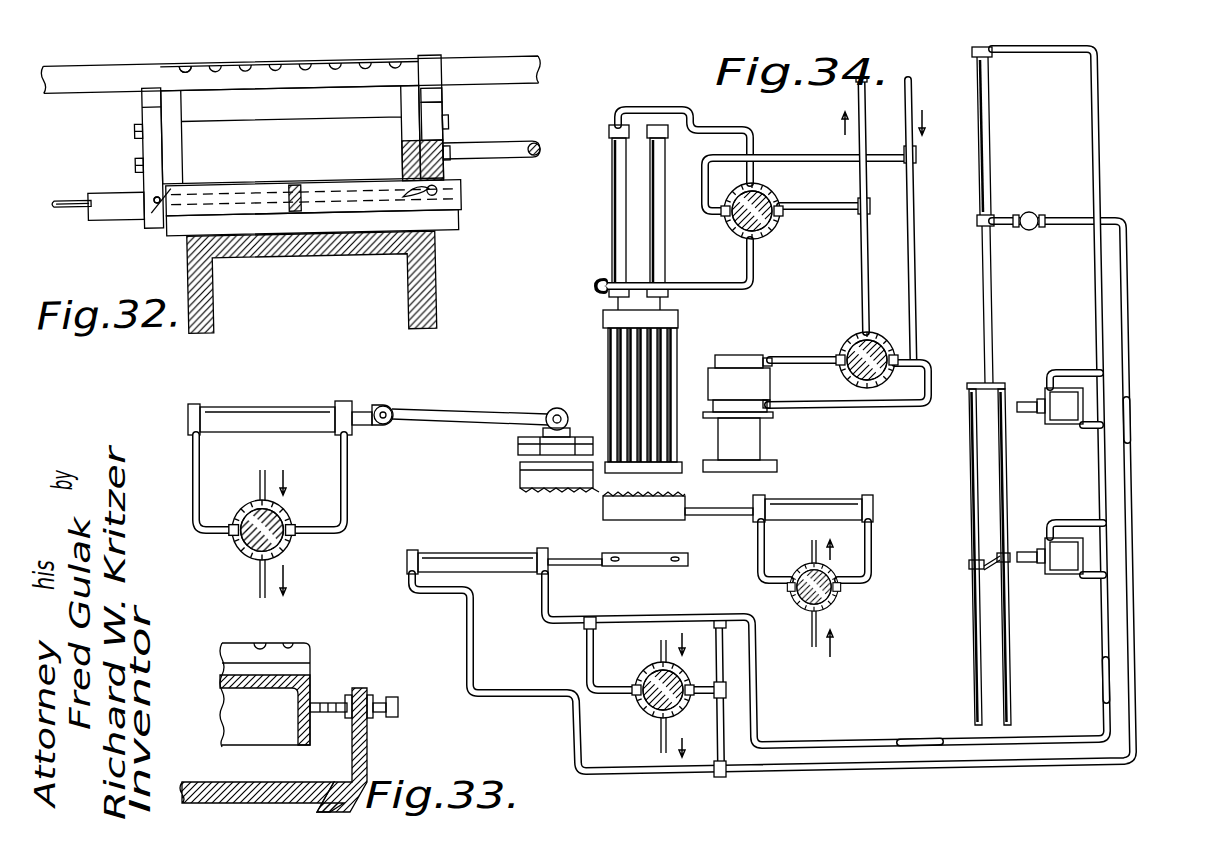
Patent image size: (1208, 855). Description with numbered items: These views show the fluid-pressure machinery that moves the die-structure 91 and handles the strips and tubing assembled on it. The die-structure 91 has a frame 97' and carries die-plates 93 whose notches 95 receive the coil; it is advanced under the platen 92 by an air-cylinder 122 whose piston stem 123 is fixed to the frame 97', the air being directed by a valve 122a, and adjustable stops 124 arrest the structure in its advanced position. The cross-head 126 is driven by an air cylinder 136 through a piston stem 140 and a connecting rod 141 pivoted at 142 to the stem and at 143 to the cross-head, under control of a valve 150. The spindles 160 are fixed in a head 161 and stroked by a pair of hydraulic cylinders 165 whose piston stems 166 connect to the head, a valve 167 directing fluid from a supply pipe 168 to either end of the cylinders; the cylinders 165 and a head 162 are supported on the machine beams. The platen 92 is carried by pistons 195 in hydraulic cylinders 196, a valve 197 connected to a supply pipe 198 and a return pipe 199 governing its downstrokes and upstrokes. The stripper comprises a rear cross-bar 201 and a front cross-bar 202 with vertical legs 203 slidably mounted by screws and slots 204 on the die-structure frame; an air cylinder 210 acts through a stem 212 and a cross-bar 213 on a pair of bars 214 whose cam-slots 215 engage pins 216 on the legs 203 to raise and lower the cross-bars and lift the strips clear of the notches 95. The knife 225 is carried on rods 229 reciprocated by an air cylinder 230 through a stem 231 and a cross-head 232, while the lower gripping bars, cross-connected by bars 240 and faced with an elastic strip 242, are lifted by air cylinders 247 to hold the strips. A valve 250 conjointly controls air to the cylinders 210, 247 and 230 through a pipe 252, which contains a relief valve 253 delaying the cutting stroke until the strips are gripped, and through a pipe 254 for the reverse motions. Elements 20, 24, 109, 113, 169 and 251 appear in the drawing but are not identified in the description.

In FIG. 32, the frame bar 20 is at (60, 95).
In FIG. 34, the motor 24 is at (1062, 572).
In FIG. 32, the die-structure 91 is at (425, 78).
In FIG. 34, the die-structure 91 is at (634, 522).
In FIG. 34, the platen 92 is at (776, 462).
In FIG. 32, the die-plates 93 is at (312, 64).
In FIG. 33, the die-plates 93 is at (288, 643).
In FIG. 32, the notches 95 is at (226, 64).
In FIG. 33, the notches 95 is at (260, 643).
In FIG. 32, the frame of the die-structure 97' is at (291, 135).
In FIG. 33, the frame of the die-structure 97' is at (240, 695).
In FIG. 34, the frame of the die-structure 97' is at (661, 515).
In FIG. 32, the base support 109 is at (340, 247).
In FIG. 33, the base support 109 is at (258, 788).
In FIG. 32, the rod 113 is at (540, 143).
In FIG. 34, the air-cylinder 122 is at (814, 499).
In FIG. 34, the valve 122a is at (840, 616).
In FIG. 34, the stem 123 is at (720, 508).
In FIG. 33, the adjustable stops 124 is at (334, 697).
In FIG. 33, the cross-head 126 is at (516, 450).
In FIG. 33, the air cylinder 136 is at (283, 405).
In FIG. 33, the stem 140 is at (382, 404).
In FIG. 33, the connecting rod 141 is at (485, 409).
In FIG. 33, the pivot 142 is at (396, 408).
In FIG. 33, the pivot 143 is at (560, 406).
In FIG. 33, the valve 150 is at (250, 552).
In FIG. 34, the spindles 160 is at (678, 360).
In FIG. 34, the head 161 is at (640, 313).
In FIG. 34, the head 162 is at (648, 476).
In FIG. 34, the hydraulic cylinders 165 is at (614, 210).
In FIG. 34, the stems 166 is at (688, 298).
In FIG. 34, the valve 167 is at (778, 190).
In FIG. 34, the pipe 168 is at (788, 156).
In FIG. 34, the pipe 169 is at (810, 215).
In FIG. 34, the pistons 195 is at (739, 439).
In FIG. 34, the hydraulic cylinders 196 is at (738, 386).
In FIG. 34, the valve 197 is at (876, 333).
In FIG. 34, the pipe 198 is at (864, 278).
In FIG. 34, the pipe 199 is at (914, 236).
In FIG. 32, the rear cross-bar 201 is at (142, 104).
In FIG. 32, the front cross-bar 202 is at (445, 92).
In FIG. 32, the vertical legs 203 is at (128, 162).
In FIG. 32, the screws and slots 204 is at (130, 130).
In FIG. 33, the air cylinder 210 is at (500, 554).
In FIG. 32, the stem 212 is at (60, 205).
In FIG. 32, the cross-bar 213 is at (308, 174).
In FIG. 32, the bars 214 is at (314, 208).
In FIG. 33, the bars 214 is at (638, 566).
In FIG. 32, the cam-slots 215 is at (128, 210).
In FIG. 32, the pins 216 is at (160, 200).
In FIG. 34, the knife 225 is at (970, 560).
In FIG. 34, the rods 229 is at (972, 526).
In FIG. 34, the air cylinder 230 is at (976, 164).
In FIG. 34, the stem 231 is at (992, 310).
In FIG. 34, the cross-head 232 is at (972, 383).
In FIG. 34, the bars 240 is at (1024, 416).
In FIG. 33, the elastic strip 242 is at (570, 558).
In FIG. 34, the air cylinders 247 is at (1066, 434).
In FIG. 33, the valve 250 is at (640, 668).
In FIG. 33, the valve stem 251 is at (660, 646).
In FIG. 33, the pipe 252 is at (576, 736).
In FIG. 34, the pipe 252 is at (1128, 407).
In FIG. 34, the relief valve 253 is at (1030, 230).
In FIG. 33, the pipe 254 is at (698, 620).
In FIG. 34, the pipe 254 is at (1096, 678).